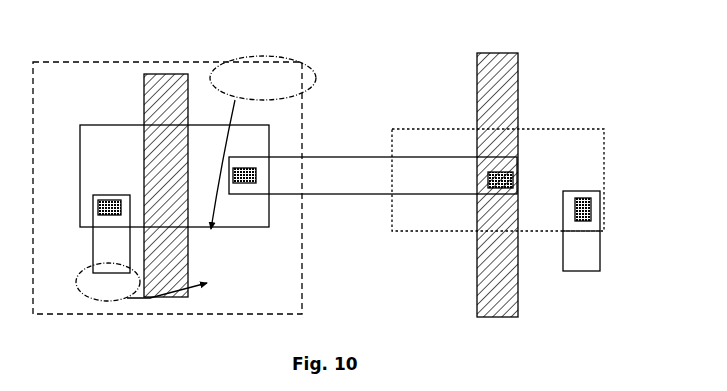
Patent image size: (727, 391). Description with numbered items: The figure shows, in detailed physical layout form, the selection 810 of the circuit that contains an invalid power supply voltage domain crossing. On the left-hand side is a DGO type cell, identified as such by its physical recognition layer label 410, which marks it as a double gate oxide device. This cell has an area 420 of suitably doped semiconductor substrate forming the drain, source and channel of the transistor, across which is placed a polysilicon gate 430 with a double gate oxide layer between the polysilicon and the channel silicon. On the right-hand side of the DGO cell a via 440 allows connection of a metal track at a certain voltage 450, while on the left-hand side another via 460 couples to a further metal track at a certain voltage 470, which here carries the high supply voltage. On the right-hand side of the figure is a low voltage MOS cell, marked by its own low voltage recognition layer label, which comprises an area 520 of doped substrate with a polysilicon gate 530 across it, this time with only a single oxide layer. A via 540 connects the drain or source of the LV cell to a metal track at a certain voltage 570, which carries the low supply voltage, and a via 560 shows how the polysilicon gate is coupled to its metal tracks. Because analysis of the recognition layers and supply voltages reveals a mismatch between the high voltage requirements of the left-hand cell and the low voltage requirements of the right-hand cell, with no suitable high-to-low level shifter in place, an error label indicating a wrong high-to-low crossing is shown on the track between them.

The OD_33 physical recognition layer label 410 is at (267, 128).
The area of doped semiconductor substrate 420 is at (171, 188).
The polysilicon gate 430 is at (151, 182).
The via 440 is at (265, 159).
The metal track at a certain voltage 450 is at (373, 158).
The via 460 is at (93, 220).
The metal track at a certain voltage 470 is at (129, 257).
The area of doped semiconductor substrate 520 is at (507, 186).
The polysilicon gate 530 is at (520, 185).
The via 540 is at (597, 230).
The via 560 is at (518, 162).
The metal track at a certain voltage 570 is at (561, 230).
The selection 810 is at (305, 336).